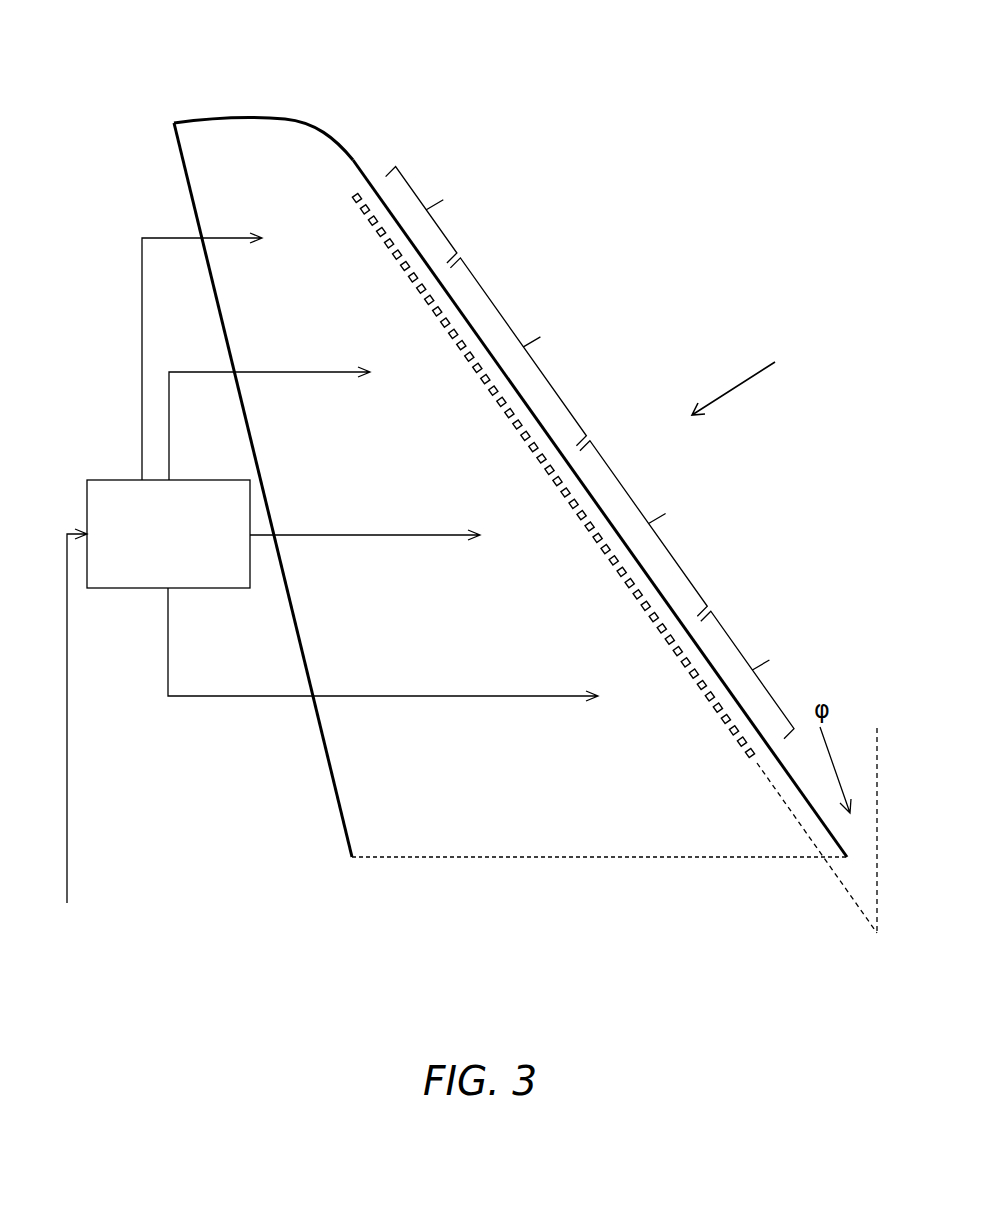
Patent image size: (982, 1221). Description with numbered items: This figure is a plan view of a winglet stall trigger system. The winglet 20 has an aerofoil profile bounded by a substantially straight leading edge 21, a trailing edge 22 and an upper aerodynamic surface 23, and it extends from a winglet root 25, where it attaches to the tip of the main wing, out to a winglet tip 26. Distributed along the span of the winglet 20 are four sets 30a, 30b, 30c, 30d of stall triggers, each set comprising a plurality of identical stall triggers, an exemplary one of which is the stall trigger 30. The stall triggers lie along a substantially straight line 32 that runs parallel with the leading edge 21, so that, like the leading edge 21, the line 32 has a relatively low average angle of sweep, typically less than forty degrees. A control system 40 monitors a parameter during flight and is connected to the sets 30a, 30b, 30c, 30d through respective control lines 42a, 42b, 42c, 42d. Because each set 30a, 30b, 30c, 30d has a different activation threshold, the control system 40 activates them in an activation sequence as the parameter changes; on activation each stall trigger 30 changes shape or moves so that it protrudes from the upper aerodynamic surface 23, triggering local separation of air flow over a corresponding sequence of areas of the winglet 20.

The winglet 20 is at (752, 376).
The leading edge 21 is at (656, 587).
The trailing edge 22 is at (336, 792).
The upper aerodynamic surface 23 is at (618, 768).
The winglet root 25 is at (580, 860).
The winglet tip 26 is at (239, 116).
The stall trigger 30 is at (473, 374).
The first set of stall triggers 30a is at (439, 215).
The second set of stall triggers 30b is at (520, 352).
The third set of stall triggers 30c is at (649, 529).
The fourth set of stall triggers 30d is at (765, 675).
The straight line of stall triggers 32 is at (845, 888).
The control system 40 is at (100, 480).
The first control line 42a is at (158, 237).
The second control line 42b is at (289, 368).
The third control line 42c is at (358, 530).
The fourth control line 42d is at (451, 692).